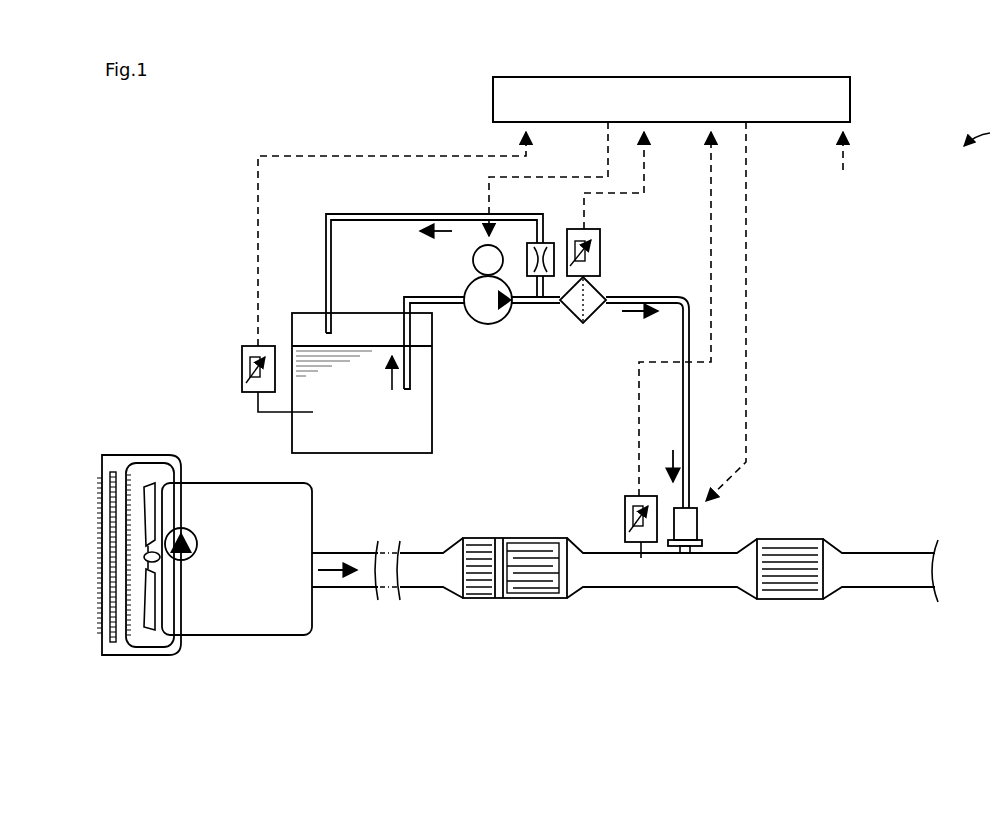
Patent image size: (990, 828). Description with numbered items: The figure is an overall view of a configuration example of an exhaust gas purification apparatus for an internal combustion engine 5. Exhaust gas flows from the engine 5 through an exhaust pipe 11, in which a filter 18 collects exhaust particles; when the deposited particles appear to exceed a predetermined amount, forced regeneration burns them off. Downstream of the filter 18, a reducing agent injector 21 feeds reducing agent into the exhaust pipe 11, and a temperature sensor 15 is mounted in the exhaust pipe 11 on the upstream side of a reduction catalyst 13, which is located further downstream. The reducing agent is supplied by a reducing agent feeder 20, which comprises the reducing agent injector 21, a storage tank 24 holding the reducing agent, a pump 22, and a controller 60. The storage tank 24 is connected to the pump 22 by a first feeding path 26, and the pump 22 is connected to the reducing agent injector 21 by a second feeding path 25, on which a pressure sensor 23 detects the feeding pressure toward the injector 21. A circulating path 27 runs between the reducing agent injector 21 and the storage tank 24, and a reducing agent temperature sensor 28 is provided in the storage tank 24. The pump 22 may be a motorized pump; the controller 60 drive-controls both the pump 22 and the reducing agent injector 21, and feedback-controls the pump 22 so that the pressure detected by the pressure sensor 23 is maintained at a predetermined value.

The controller 60 is at (624, 289).
The internal combustion engine 5 is at (204, 555).
The reducing agent feeder 20 is at (424, 248).
The circulating path 27 is at (472, 212).
The first feeding path 26 is at (437, 296).
The pump 22 is at (508, 316).
The pressure sensor 23 is at (600, 250).
The second feeding path 25 is at (682, 430).
The storage tank 24 is at (432, 415).
The reducing agent temperature sensor 28 is at (268, 345).
The exhaust pipe 11 is at (695, 590).
The filter 18 is at (537, 590).
The reduction catalyst 13 is at (783, 585).
The temperature sensor 15 is at (625, 518).
The reducing agent injector 21 is at (698, 524).